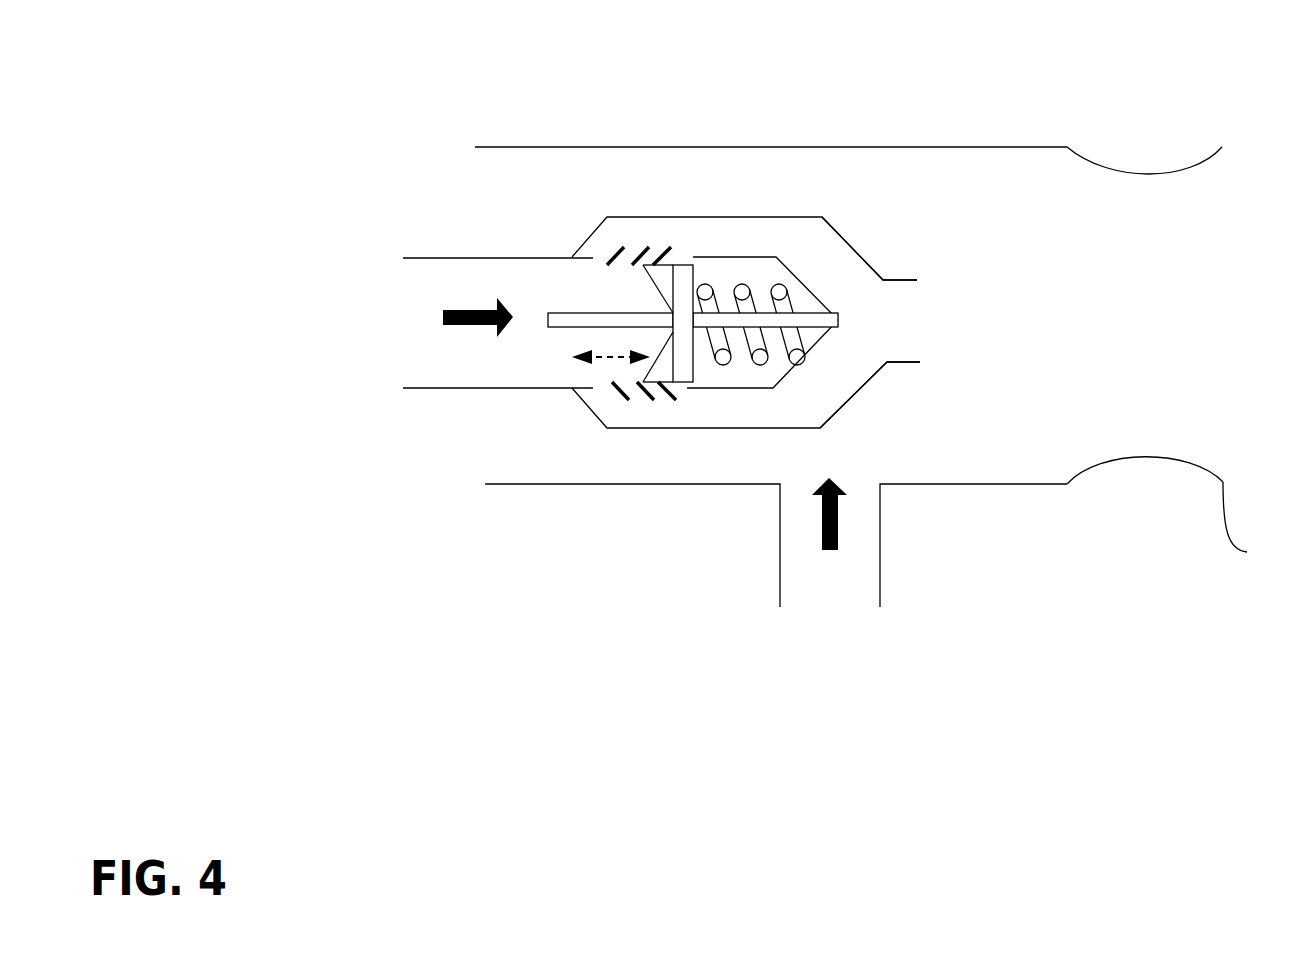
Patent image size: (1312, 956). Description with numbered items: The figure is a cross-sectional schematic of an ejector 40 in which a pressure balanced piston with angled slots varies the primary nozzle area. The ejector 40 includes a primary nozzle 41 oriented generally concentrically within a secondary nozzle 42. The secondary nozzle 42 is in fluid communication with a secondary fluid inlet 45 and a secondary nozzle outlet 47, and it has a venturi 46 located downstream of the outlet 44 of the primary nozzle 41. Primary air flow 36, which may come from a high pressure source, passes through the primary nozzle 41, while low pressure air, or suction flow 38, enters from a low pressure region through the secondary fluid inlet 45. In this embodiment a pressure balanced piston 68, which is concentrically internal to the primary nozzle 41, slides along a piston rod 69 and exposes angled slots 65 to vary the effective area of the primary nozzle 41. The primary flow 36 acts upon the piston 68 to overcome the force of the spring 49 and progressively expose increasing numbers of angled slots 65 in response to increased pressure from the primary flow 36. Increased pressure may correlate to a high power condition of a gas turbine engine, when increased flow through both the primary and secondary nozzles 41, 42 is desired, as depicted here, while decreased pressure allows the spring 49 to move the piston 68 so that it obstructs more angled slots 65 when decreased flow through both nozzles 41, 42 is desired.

The primary air flow 36 is at (457, 317).
The suction flow 38 is at (829, 531).
The ejector 40 is at (922, 125).
The primary nozzle 41 is at (875, 268).
The secondary nozzle 42 is at (1038, 147).
The outlet of the primary nozzle 44 is at (920, 362).
The secondary fluid inlet 45 is at (880, 578).
The venturi 46 is at (1140, 457).
The secondary nozzle outlet 47 is at (1252, 525).
The spring 49 is at (787, 298).
The angled slots 65 is at (640, 402).
The pressure balanced piston 68 is at (680, 263).
The piston rod 69 is at (582, 313).